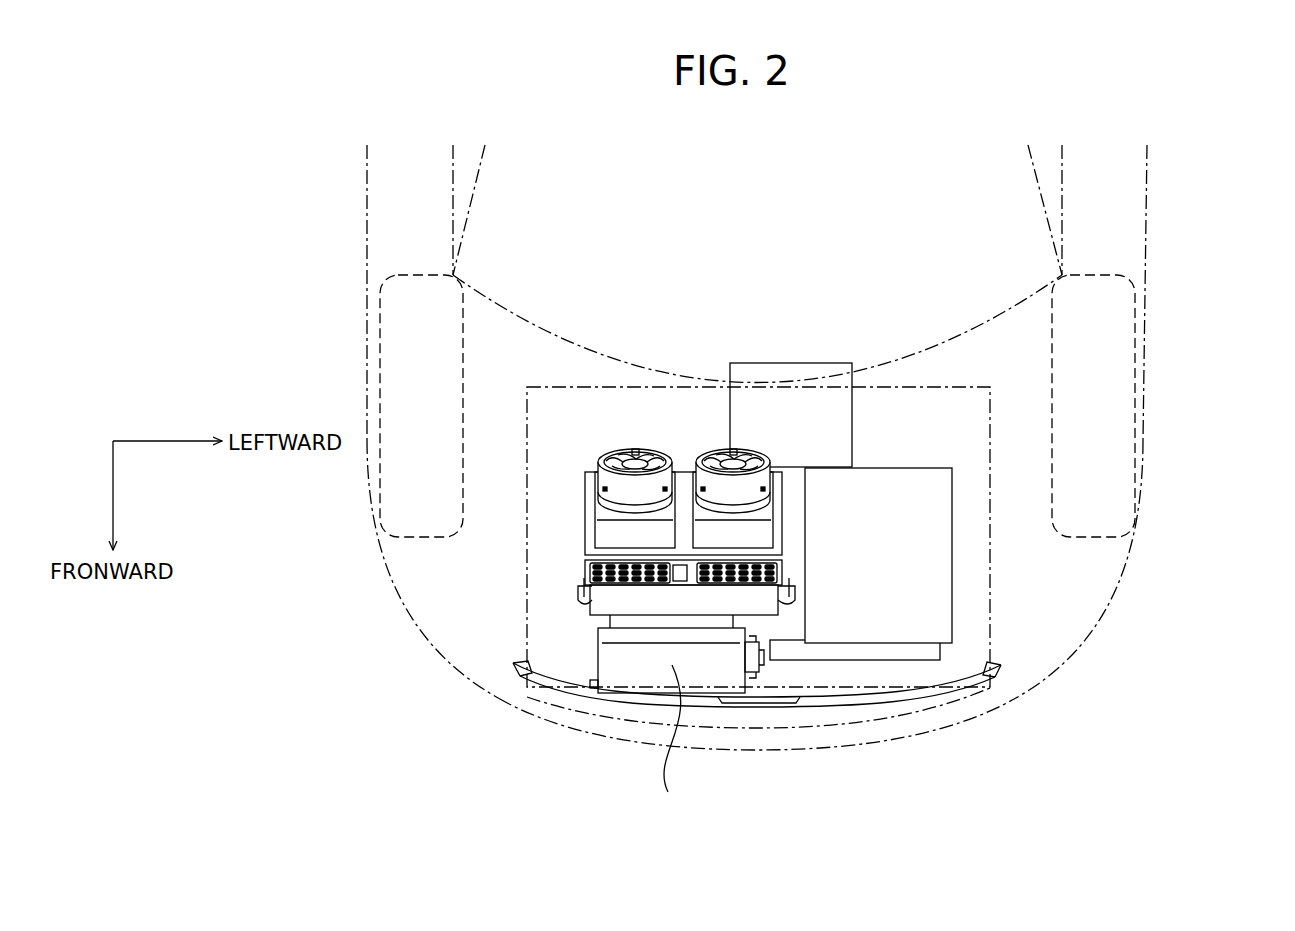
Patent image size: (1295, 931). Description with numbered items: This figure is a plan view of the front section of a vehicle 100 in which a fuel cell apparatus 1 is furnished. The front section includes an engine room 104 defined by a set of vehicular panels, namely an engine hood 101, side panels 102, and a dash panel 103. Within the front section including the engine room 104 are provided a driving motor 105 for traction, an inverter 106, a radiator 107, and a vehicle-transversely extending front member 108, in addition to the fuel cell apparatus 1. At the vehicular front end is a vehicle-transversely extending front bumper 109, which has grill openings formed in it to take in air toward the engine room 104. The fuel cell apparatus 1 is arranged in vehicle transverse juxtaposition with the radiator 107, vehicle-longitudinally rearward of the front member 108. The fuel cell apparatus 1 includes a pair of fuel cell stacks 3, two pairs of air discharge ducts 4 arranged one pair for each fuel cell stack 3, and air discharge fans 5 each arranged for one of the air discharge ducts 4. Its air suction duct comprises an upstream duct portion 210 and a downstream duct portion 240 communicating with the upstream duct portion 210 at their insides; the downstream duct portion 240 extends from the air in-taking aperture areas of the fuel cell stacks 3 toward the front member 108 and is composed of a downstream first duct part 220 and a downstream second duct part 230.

The fuel cell apparatus 1 is at (672, 435).
The fuel cell stack 3 is at (583, 563).
The air discharge duct 4 is at (625, 530).
The air discharge fan 5 is at (632, 453).
The vehicle 100 is at (1152, 222).
The engine hood 101 is at (990, 607).
The side panel 102 is at (1067, 607).
The dash panel 103 is at (925, 352).
The engine room 104 is at (582, 449).
The driving motor 105 is at (782, 368).
The inverter 106 is at (940, 527).
The radiator 107 is at (863, 652).
The front member 108 is at (761, 700).
The front bumper 109 is at (812, 752).
The upstream duct portion 210 is at (671, 743).
The downstream first duct part 220 is at (585, 622).
The downstream second duct part 230 is at (565, 609).
The downstream duct portion 240 is at (333, 620).